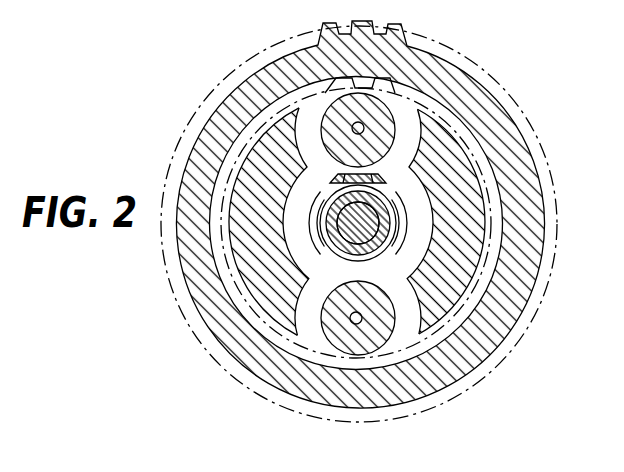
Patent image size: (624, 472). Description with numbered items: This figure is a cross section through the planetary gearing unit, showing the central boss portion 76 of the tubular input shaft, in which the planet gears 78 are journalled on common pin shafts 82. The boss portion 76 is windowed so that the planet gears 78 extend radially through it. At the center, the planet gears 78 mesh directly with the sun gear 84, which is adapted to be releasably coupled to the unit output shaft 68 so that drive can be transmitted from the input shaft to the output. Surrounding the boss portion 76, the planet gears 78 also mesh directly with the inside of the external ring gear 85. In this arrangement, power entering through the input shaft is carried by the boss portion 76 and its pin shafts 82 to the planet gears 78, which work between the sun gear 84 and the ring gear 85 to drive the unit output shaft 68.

The unit output shaft 68 is at (383, 236).
The central boss portion 76 is at (485, 243).
The planet gears 78 is at (400, 80).
The pin shafts 82 is at (364, 134).
The sun gear 84 is at (390, 215).
The external ring gear 85 is at (497, 108).